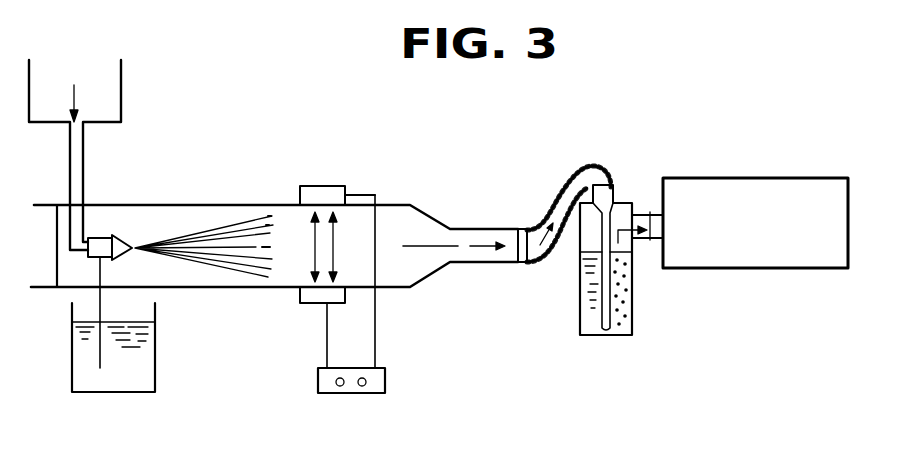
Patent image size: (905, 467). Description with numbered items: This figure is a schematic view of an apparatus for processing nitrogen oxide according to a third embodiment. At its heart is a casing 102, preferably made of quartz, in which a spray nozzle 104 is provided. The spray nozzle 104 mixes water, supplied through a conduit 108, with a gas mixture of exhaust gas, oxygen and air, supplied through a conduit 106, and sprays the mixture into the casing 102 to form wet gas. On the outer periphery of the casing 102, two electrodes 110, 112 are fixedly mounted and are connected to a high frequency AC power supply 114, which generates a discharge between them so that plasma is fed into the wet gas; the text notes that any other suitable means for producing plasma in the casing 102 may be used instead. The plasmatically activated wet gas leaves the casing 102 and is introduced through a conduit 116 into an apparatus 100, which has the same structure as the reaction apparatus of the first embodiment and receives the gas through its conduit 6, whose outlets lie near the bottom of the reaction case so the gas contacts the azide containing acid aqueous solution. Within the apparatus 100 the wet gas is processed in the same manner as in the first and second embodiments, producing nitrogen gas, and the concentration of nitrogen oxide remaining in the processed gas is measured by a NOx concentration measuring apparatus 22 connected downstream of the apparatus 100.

The casing 102 is at (400, 203).
The spray nozzle 104 is at (135, 247).
The conduit 106 is at (83, 158).
The conduit 108 is at (102, 355).
The electrode 110 is at (313, 303).
The electrode 112 is at (322, 196).
The high frequency AC power supply 114 is at (352, 393).
The conduit 116 is at (547, 210).
The conduit 6 is at (603, 197).
The apparatus 100 is at (634, 325).
The NOx concentration measuring apparatus 22 is at (745, 178).